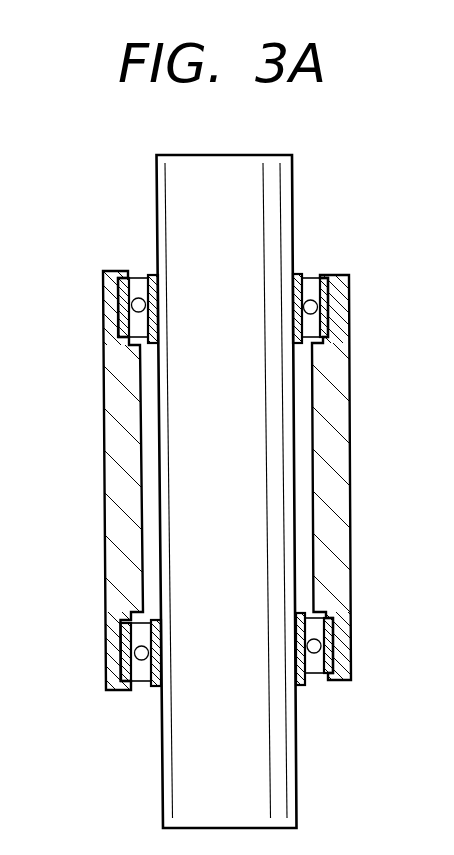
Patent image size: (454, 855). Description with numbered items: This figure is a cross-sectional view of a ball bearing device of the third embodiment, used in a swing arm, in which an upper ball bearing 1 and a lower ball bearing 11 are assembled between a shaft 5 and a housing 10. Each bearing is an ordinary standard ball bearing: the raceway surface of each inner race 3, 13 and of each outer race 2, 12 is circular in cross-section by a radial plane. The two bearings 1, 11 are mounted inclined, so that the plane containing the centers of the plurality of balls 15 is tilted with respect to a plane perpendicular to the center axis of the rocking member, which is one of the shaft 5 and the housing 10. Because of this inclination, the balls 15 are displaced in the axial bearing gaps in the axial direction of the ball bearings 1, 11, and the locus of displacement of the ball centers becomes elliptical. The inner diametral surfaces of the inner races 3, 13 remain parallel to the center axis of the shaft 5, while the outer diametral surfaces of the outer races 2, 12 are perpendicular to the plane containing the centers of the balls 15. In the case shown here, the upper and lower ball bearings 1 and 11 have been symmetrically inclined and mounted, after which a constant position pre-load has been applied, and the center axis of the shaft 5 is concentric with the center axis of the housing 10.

The ball bearing 1 is at (189, 246).
The outer race 2 is at (333, 320).
The inner race 3 is at (298, 271).
The shaft 5 is at (228, 165).
The housing 10 is at (110, 322).
The ball bearing 11 is at (236, 688).
The outer race 12 is at (334, 660).
The inner race 13 is at (318, 670).
The balls 15 is at (315, 307).